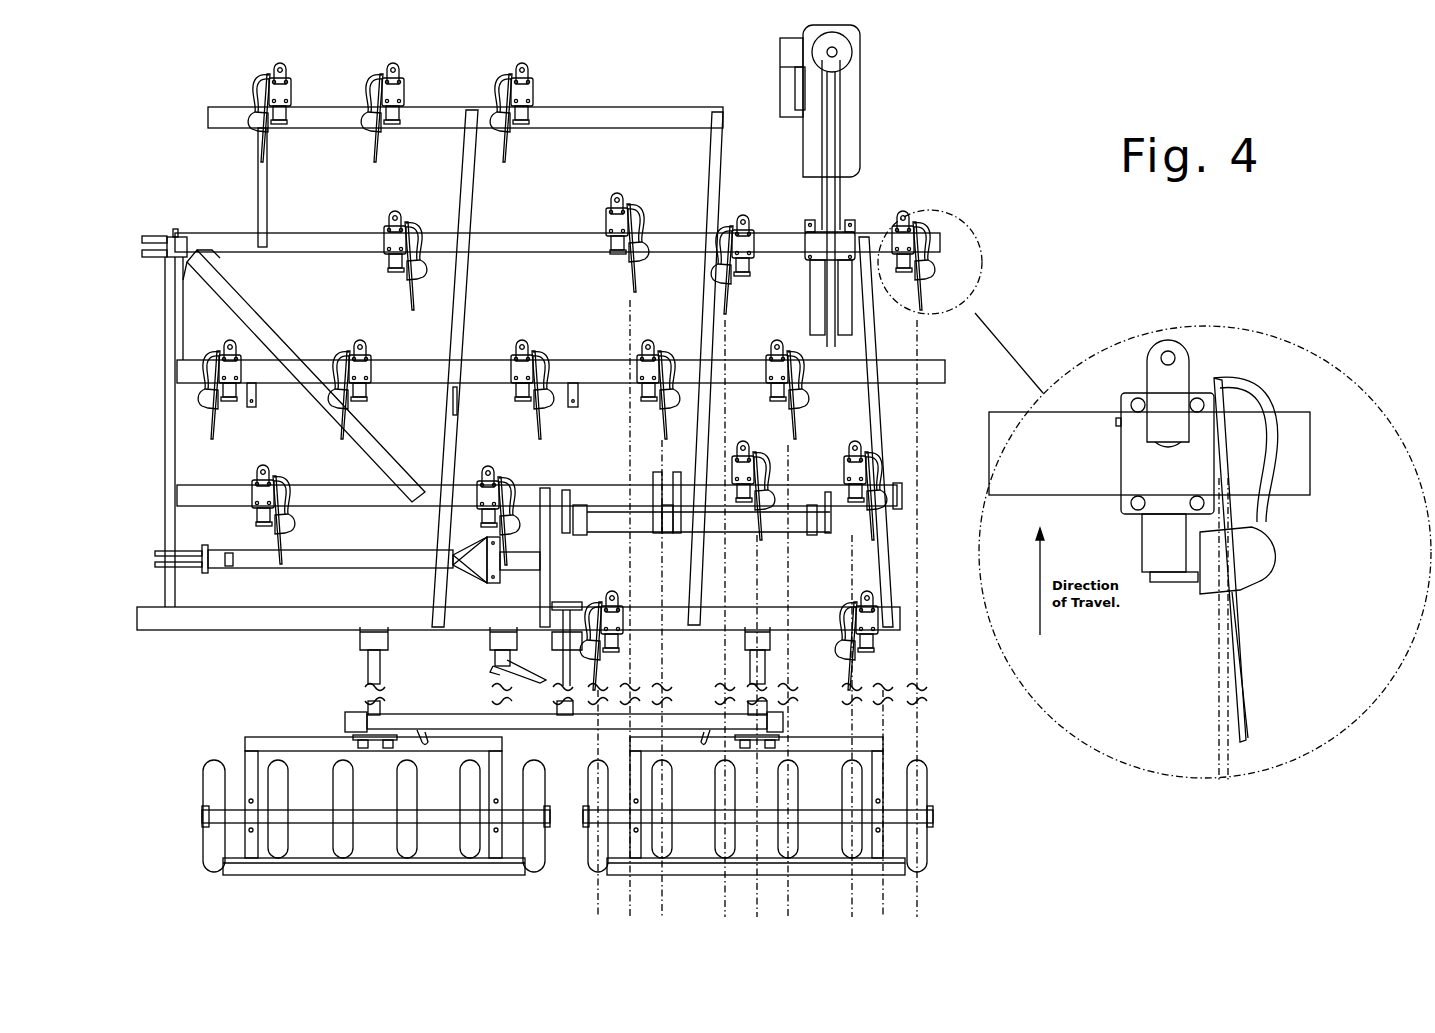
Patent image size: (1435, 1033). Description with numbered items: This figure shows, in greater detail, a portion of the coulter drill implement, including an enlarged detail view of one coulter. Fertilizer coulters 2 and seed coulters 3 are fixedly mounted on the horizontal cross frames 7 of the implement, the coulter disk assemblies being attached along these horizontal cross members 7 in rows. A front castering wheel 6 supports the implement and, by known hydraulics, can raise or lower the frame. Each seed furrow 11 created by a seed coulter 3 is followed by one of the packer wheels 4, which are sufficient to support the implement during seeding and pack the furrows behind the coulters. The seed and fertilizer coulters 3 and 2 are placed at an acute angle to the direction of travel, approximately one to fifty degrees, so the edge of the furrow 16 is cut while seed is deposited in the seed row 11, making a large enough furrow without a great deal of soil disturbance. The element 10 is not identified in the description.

The fertilizer coulter assembly 2 is at (622, 204).
The seed coulter assembly 3 is at (742, 218).
The packer wheel 4 is at (928, 768).
The front castering wheel 6 is at (860, 130).
The horizontal cross member 7 is at (515, 237).
The roller frame bar 10 is at (905, 882).
The seed furrow 11 is at (855, 887).
The furrow edge 16 is at (1226, 739).